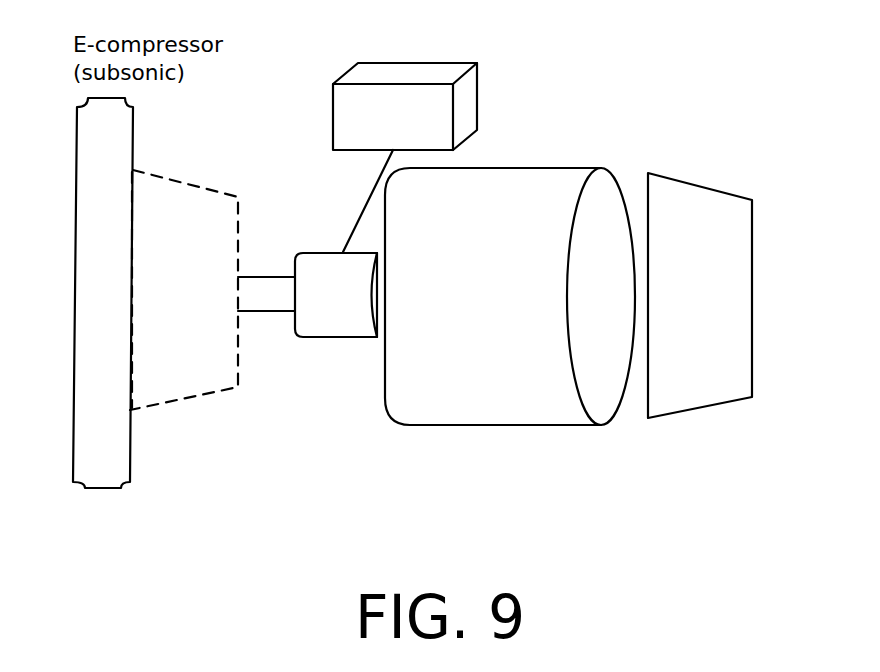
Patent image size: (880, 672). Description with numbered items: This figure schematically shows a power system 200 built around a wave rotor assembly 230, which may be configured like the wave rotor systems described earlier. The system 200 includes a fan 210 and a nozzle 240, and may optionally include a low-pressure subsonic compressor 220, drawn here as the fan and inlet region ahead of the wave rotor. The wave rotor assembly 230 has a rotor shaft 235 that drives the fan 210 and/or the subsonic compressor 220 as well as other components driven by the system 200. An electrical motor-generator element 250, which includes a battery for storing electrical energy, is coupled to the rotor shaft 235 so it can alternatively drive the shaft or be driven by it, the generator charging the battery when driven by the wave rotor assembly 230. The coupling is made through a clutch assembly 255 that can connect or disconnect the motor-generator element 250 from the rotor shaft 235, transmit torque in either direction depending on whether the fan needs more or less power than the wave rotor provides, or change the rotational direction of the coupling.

The power system 200 is at (726, 112).
The fan 210 is at (108, 462).
The low-pressure subsonic compressor 220 is at (205, 367).
The wave rotor system 230 is at (555, 393).
The rotor shaft 235 is at (270, 294).
The nozzle 240 is at (747, 245).
The electrical motor-generator element 250 is at (422, 75).
The clutch assembly 255 is at (337, 310).